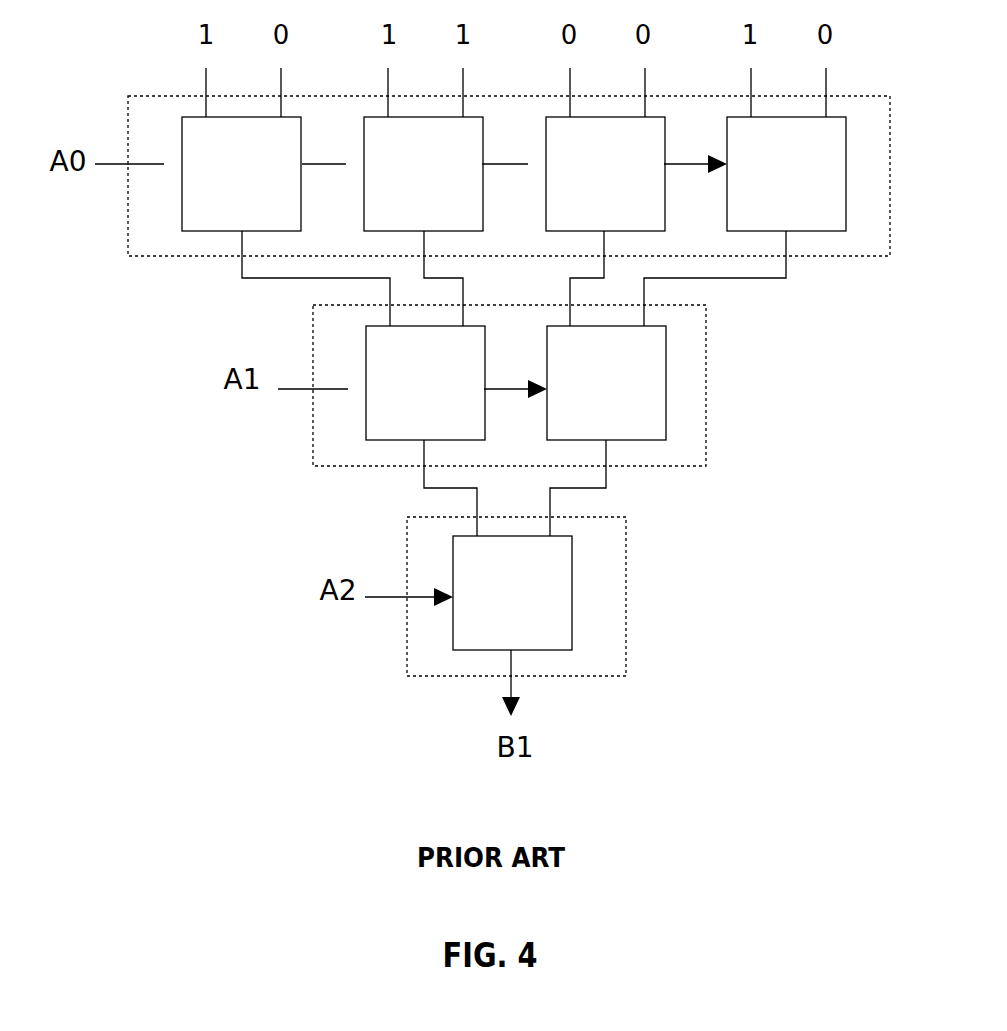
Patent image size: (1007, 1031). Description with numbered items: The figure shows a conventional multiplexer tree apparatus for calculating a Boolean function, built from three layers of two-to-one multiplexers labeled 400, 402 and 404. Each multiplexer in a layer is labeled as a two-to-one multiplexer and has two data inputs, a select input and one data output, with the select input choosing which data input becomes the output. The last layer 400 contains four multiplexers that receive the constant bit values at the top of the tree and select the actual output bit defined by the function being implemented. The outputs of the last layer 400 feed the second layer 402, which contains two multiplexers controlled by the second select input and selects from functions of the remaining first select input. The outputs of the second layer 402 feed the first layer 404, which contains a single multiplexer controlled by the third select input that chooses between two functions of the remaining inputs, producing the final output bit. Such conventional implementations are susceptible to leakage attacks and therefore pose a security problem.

The last layer of 2:1 multiplexers 400 is at (118, 267).
The second layer of 2:1 multiplexers 402 is at (299, 476).
The first layer of 2:1 multiplexers 404 is at (392, 686).